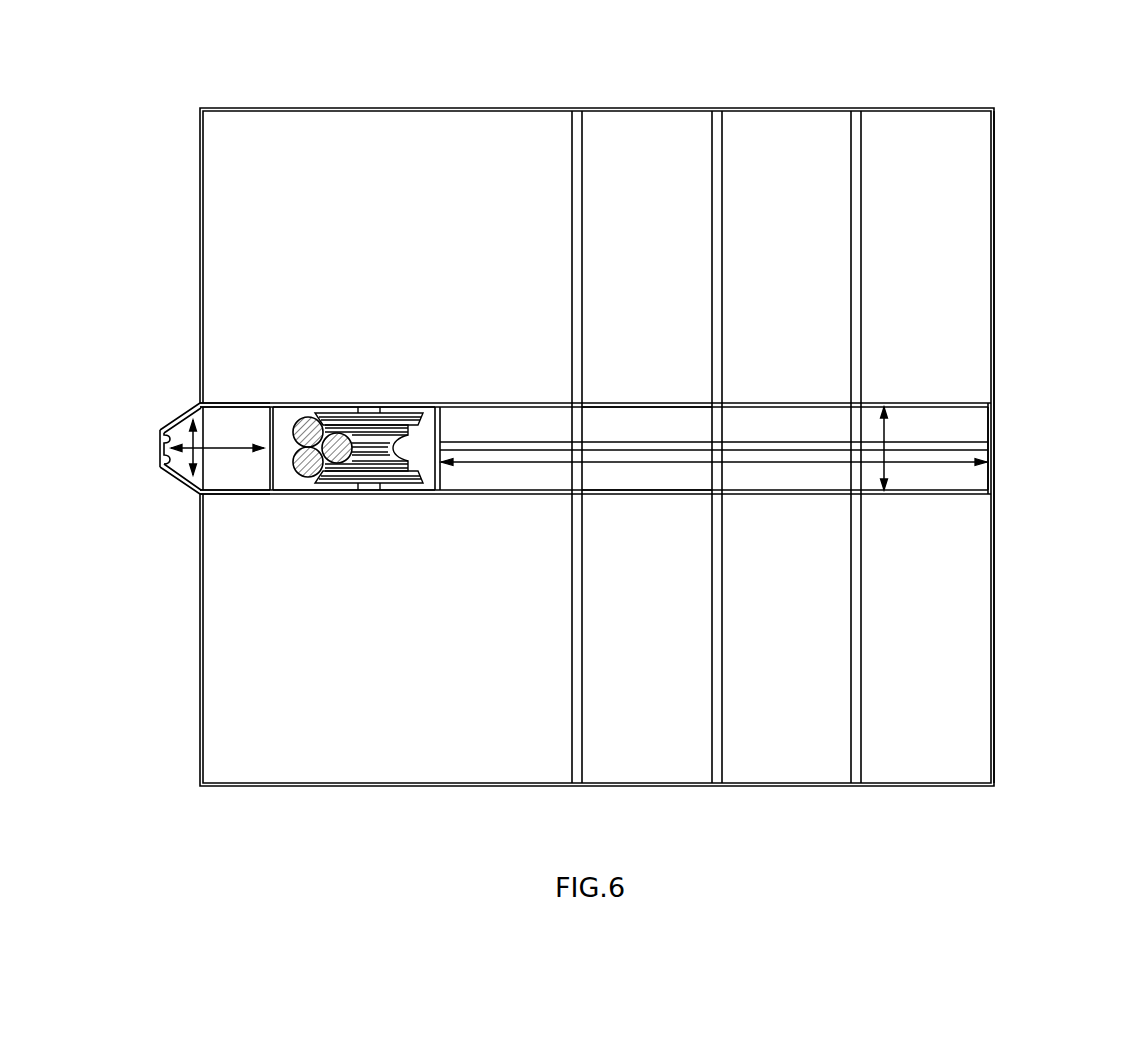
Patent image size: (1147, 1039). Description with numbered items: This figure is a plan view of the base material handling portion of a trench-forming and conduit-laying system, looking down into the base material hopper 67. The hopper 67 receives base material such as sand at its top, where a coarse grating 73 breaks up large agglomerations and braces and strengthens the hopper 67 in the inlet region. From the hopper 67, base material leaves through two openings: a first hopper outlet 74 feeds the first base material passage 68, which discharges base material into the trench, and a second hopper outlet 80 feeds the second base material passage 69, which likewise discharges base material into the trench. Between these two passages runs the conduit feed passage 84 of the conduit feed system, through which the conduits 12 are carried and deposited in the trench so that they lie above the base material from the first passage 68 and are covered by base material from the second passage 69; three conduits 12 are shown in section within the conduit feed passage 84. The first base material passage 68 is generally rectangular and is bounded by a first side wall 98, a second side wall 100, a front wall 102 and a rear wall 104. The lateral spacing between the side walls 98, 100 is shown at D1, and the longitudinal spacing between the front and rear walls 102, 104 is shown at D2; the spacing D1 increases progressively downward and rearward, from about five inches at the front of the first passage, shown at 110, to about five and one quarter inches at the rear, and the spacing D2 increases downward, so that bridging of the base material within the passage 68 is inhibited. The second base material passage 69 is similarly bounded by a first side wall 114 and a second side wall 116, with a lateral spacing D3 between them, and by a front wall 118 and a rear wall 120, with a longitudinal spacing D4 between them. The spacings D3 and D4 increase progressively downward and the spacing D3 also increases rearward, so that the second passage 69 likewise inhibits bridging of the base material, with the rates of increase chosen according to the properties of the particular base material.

The conduit 12 is at (327, 430).
The base material hopper 67 is at (497, 140).
The first base material passage 68 is at (253, 423).
The second base material passage 69 is at (753, 425).
The coarse grating 73 is at (868, 140).
The first hopper outlet 74 is at (205, 412).
The second hopper outlet 80 is at (587, 402).
The conduit feed passage 84 is at (285, 417).
The first side wall 98 is at (205, 412).
The second side wall 100 is at (227, 492).
The front wall 102 is at (160, 428).
The rear wall 104 is at (267, 472).
The front of the first base material passage 110 is at (171, 473).
The first side wall 114 is at (656, 428).
The second side wall 116 is at (662, 478).
The front wall 118 is at (443, 477).
The rear wall 120 is at (992, 472).
The lateral spacing of the first base material passage D1 is at (173, 427).
The longitudinal spacing of the first base material passage D2 is at (202, 483).
The lateral spacing of the second base material passage D3 is at (887, 433).
The longitudinal spacing of the second base material passage D4 is at (920, 466).